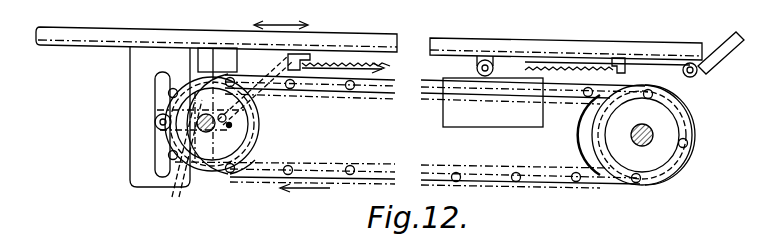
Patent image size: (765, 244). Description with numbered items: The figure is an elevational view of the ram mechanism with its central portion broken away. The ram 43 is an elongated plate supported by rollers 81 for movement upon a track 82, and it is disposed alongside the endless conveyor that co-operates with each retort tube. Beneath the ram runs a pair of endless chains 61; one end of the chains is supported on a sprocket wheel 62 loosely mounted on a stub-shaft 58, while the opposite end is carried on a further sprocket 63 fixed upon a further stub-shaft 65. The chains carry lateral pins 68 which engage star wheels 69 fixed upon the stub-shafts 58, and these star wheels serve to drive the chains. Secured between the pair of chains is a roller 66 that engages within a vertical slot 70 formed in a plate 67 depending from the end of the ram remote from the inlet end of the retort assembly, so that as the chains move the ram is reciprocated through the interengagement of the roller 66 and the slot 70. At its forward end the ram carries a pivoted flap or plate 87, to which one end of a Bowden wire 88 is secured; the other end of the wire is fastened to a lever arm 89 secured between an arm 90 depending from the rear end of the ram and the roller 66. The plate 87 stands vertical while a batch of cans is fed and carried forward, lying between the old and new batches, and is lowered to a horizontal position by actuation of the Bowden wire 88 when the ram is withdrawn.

The ram 43 is at (497, 42).
The stub-shaft 58 is at (654, 132).
The endless chains 61 is at (318, 87).
The sprocket wheel 62 is at (600, 118).
The further sprockets 63 is at (248, 150).
The further stub-shaft 65 is at (206, 133).
The roller 66 is at (154, 121).
The plate 67 is at (132, 60).
The lateral pins 68 is at (352, 89).
The star wheels 69 is at (662, 145).
The vertical slot 70 is at (160, 160).
The rollers 81 is at (482, 63).
The track 82 is at (505, 105).
The pivoted flap or plate 87 is at (728, 40).
The Bowden wire 88 is at (285, 62).
The lever arm 89 is at (178, 158).
The arm 90 is at (222, 56).